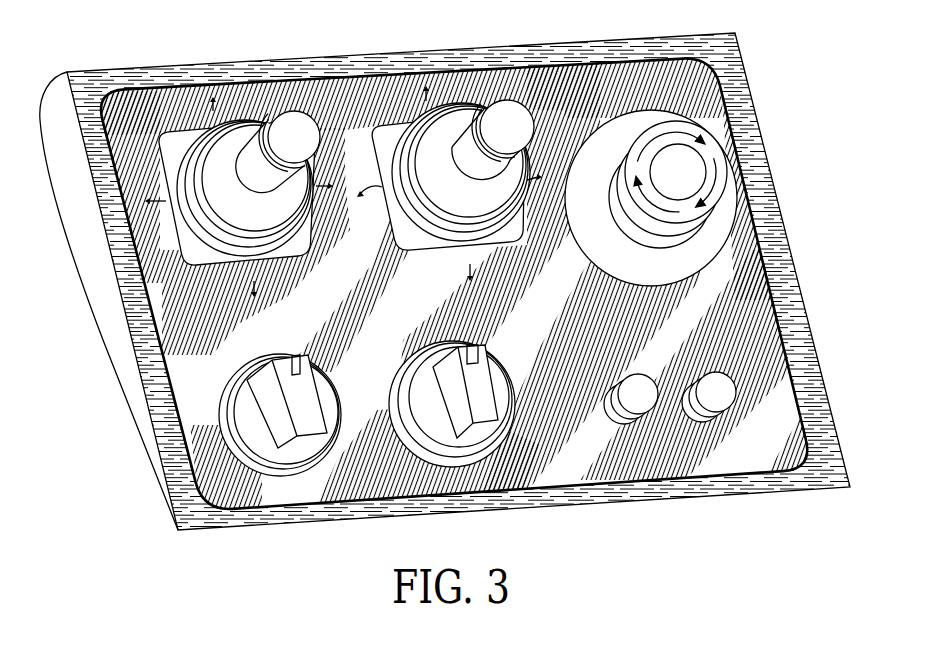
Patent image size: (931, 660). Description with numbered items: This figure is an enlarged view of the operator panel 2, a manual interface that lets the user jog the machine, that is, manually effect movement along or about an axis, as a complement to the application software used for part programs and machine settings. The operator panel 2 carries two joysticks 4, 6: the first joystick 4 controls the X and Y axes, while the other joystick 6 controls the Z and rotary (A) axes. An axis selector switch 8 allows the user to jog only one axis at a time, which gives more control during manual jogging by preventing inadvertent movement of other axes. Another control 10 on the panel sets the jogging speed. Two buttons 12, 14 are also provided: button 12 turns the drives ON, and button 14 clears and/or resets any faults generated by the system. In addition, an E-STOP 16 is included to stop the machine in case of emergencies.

The operator panel 2 is at (84, 306).
The first joystick 4 is at (273, 120).
The joystick 6 is at (532, 97).
The axis selector switch 8 is at (233, 450).
The control 10 is at (493, 443).
The button 12 is at (722, 420).
The button 14 is at (643, 413).
The E-STOP 16 is at (683, 114).